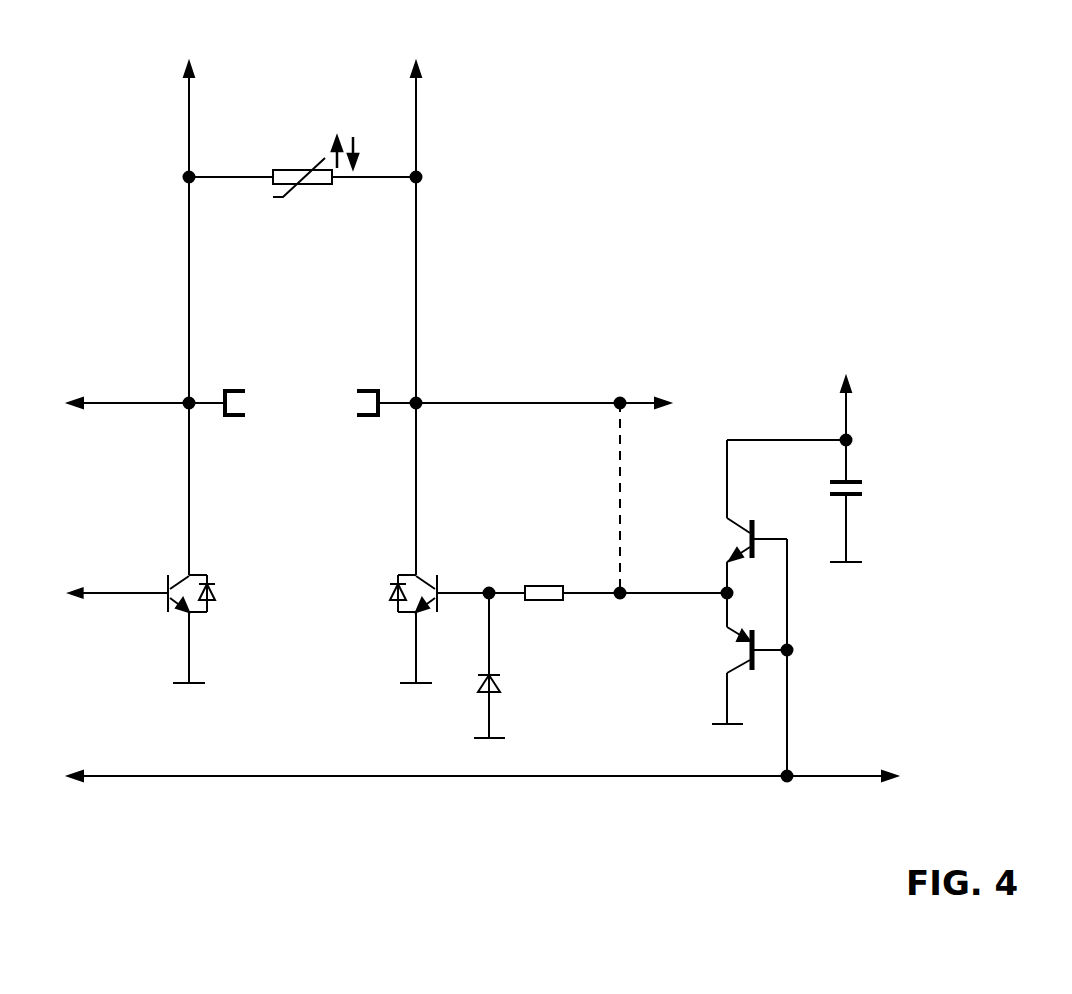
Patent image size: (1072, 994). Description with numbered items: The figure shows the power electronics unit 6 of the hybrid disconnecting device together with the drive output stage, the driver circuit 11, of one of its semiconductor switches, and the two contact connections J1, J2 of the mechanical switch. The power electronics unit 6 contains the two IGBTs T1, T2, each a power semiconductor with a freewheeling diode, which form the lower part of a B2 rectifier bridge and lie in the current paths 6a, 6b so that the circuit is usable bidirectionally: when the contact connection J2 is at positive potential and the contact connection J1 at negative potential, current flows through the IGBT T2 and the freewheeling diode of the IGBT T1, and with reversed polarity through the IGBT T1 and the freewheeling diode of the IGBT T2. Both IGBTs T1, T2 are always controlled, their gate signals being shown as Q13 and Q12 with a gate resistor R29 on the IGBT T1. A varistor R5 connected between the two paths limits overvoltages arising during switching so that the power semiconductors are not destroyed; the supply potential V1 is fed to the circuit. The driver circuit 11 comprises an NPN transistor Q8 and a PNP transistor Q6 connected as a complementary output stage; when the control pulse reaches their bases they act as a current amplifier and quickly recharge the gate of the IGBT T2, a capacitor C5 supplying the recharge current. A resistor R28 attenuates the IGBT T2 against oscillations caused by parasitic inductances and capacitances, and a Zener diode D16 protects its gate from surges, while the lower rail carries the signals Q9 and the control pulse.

The power electronics unit 6 is at (612, 218).
The current path 6a is at (189, 263).
The current path 6b is at (416, 263).
The driver circuit 11 is at (858, 630).
The supply voltage V1 is at (189, 101).
The varistor R5 is at (288, 170).
The contact connection J1 is at (235, 389).
The contact connection J2 is at (368, 389).
The signal Q13 is at (103, 380).
The signal Q12 is at (648, 381).
The resistor R29 is at (118, 576).
The IGBT T1 is at (213, 593).
The IGBT T2 is at (376, 593).
The resistor R28 is at (546, 575).
The Zener diode D16 is at (524, 665).
The NPN-transistor Q8 is at (736, 516).
The PNP-transistor Q6 is at (736, 658).
The capacitor C5 is at (869, 519).
The signals Q9, Q10 Q9 is at (119, 800).